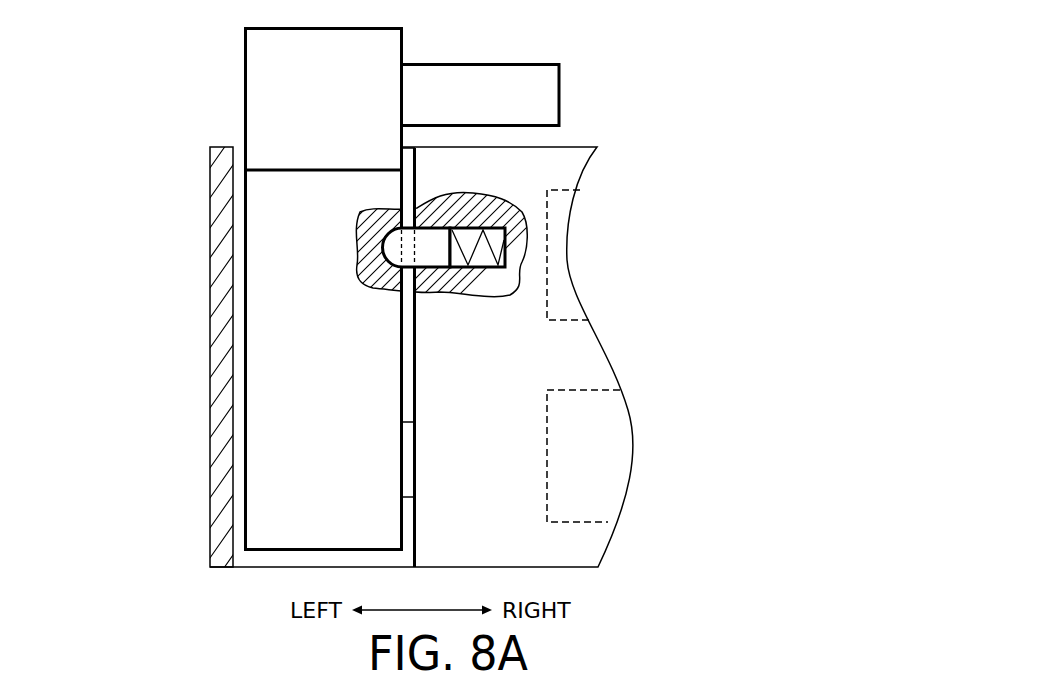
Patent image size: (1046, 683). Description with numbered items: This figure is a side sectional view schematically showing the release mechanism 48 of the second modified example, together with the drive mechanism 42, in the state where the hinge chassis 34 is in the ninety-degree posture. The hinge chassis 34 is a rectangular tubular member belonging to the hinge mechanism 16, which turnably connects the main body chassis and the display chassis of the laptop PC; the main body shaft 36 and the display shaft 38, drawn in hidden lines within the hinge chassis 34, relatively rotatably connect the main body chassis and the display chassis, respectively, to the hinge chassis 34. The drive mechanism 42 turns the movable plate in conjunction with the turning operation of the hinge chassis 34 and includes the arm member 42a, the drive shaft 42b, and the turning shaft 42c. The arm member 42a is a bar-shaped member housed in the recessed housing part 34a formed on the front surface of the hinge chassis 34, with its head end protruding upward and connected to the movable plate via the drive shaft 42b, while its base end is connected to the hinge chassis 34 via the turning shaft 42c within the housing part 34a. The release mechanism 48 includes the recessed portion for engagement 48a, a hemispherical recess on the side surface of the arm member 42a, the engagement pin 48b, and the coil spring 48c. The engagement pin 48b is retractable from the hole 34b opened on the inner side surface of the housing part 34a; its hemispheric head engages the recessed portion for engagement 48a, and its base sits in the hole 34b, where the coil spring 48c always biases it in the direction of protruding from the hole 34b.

The hinge mechanism 16 is at (608, 77).
The hinge chassis 34 is at (560, 543).
The housing part 34a is at (231, 494).
The hole 34b is at (506, 254).
The main body shaft 36 is at (597, 452).
The display shaft 38 is at (565, 297).
The drive mechanism 42 is at (87, 212).
The arm member 42a is at (282, 331).
The drive shaft 42b is at (427, 97).
The turning shaft 42c is at (402, 458).
The release mechanism 48 is at (731, 102).
The recessed portion for engagement 48a is at (437, 247).
The engagement pin 48b is at (455, 240).
The coil spring 48c is at (506, 245).